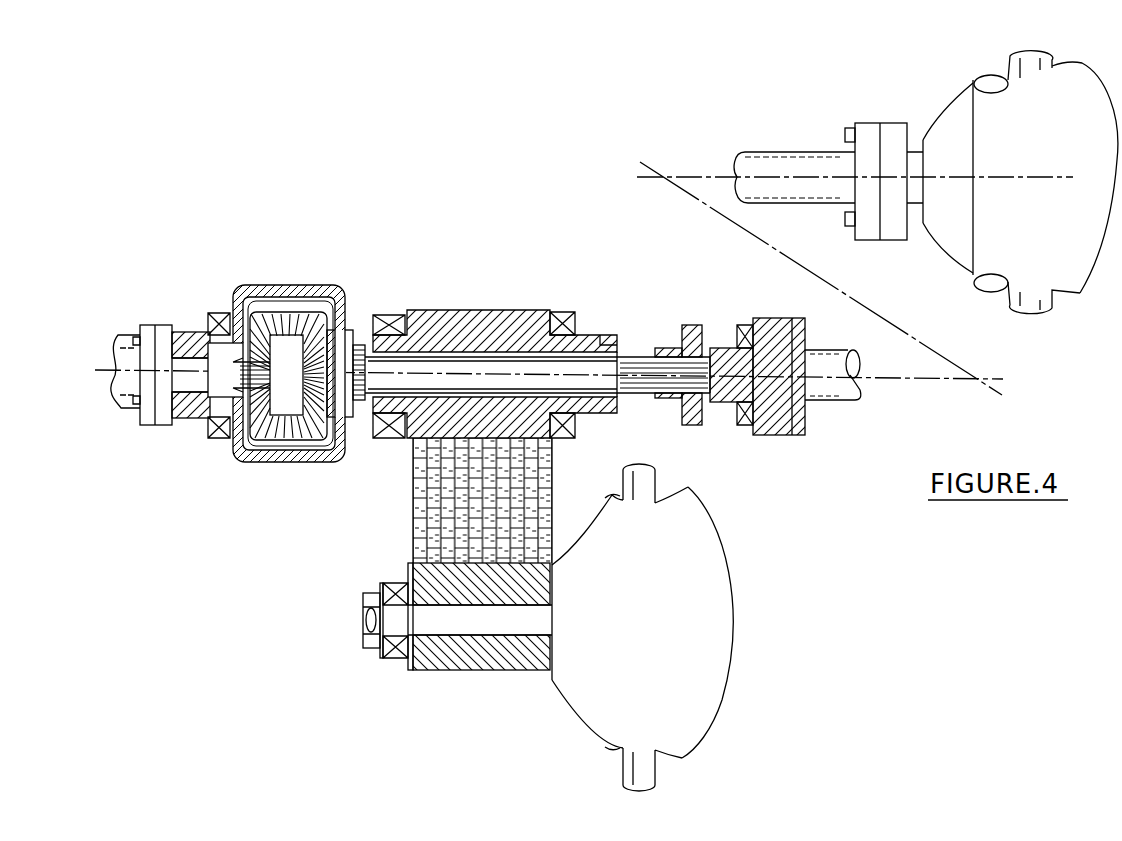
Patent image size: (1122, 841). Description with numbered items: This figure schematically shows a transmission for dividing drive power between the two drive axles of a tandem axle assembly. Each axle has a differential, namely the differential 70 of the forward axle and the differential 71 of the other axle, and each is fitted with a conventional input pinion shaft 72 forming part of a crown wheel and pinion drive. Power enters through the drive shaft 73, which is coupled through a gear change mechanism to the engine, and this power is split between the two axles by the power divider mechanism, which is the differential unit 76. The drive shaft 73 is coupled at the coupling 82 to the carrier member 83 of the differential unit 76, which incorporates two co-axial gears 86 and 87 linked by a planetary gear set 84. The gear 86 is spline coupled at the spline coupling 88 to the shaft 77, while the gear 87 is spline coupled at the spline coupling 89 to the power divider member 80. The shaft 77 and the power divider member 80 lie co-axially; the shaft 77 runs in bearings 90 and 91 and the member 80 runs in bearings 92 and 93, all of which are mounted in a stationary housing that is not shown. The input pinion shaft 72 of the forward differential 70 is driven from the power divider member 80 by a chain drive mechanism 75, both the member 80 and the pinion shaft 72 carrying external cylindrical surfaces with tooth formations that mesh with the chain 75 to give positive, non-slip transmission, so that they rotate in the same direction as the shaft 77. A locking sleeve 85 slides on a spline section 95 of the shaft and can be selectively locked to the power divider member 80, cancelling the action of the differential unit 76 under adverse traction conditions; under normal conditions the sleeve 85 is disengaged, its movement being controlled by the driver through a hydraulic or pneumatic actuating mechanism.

The differential 70 is at (1071, 281).
The differential 71 is at (715, 591).
The input pinion shaft 72 is at (354, 644).
The drive shaft 73 is at (132, 324).
The chain drive mechanism 75 is at (387, 490).
The differential unit 76 is at (246, 484).
The shaft 77 is at (518, 367).
The power divider member 80 is at (478, 312).
The coupling 82 is at (165, 313).
The carrier member 83 is at (260, 282).
The planetary gear set 84 is at (293, 302).
The locking sleeve 85 is at (691, 318).
The gear 86 is at (249, 423).
The gear 87 is at (333, 422).
The spline coupling 88 is at (237, 389).
The spline coupling 89 is at (357, 340).
The bearing 90 is at (217, 312).
The bearing 91 is at (745, 321).
The bearing 92 is at (395, 308).
The bearing 93 is at (578, 317).
The spline section 95 is at (640, 360).